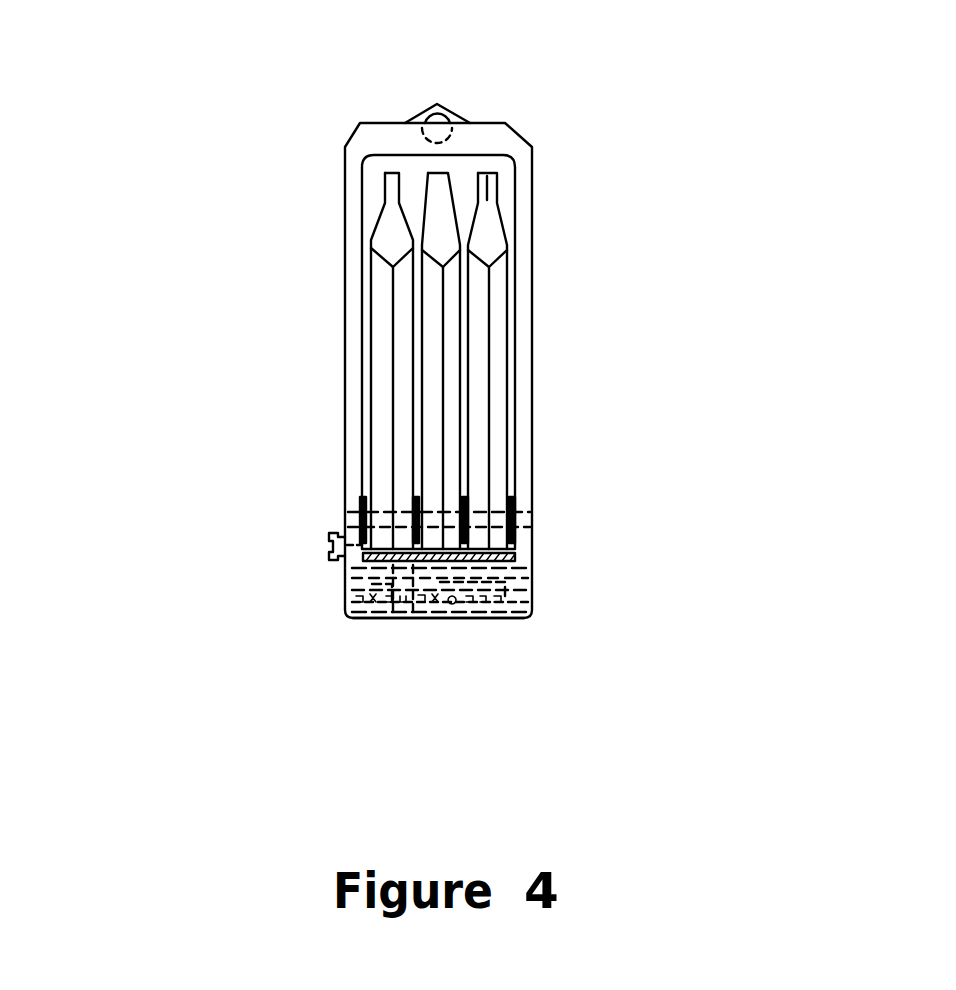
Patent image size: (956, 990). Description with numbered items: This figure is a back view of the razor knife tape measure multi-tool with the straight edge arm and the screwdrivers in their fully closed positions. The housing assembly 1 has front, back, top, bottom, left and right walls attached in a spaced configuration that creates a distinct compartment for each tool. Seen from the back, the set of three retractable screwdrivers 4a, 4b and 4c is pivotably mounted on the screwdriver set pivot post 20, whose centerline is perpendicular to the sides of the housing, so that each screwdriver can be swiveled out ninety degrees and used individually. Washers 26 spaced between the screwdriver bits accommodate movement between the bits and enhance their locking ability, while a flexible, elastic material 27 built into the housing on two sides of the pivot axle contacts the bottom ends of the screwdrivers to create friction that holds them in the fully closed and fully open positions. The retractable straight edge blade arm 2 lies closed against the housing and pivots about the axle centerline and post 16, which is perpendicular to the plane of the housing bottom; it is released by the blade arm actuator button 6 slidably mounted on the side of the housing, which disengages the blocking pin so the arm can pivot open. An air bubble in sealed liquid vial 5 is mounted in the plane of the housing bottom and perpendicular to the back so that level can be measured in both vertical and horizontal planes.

The housing assembly 1 is at (539, 350).
The straight edge blade arm 2 is at (514, 589).
The screwdriver 4a is at (449, 163).
The screwdriver 4b is at (379, 199).
The screwdriver 4c is at (513, 197).
The air bubble in sealed liquid vial 5 is at (422, 111).
The blade arm actuator button 6 is at (319, 545).
The axle centerline and post 16 is at (390, 622).
The screwdriver set pivot post 20 is at (539, 511).
The washers 26 is at (360, 497).
The flexible elastic material 27 is at (468, 568).